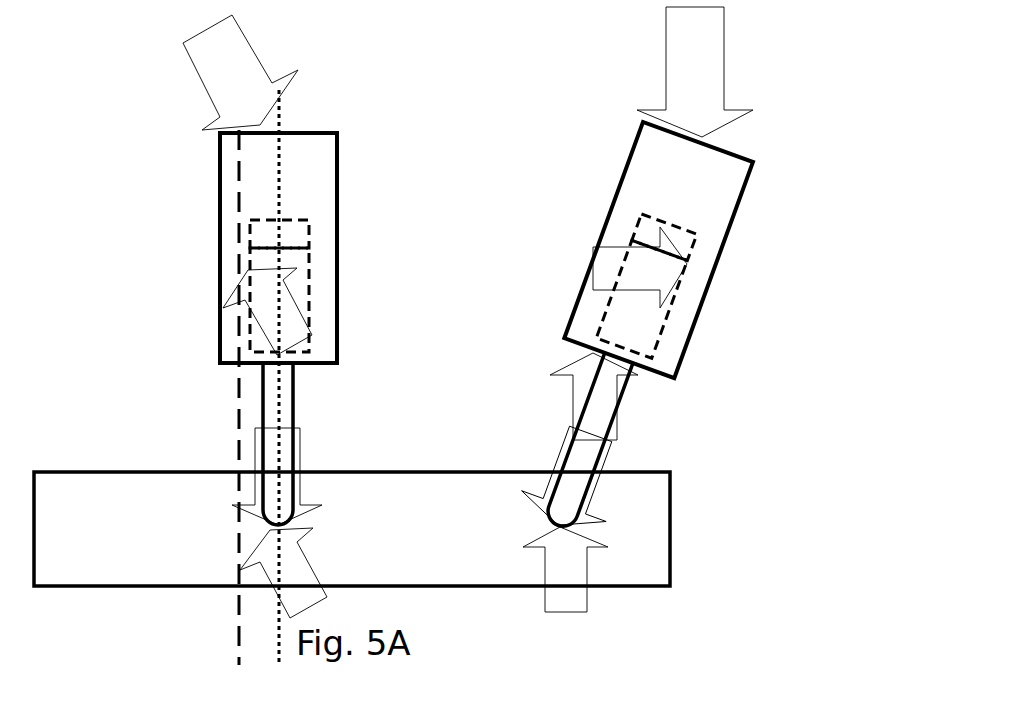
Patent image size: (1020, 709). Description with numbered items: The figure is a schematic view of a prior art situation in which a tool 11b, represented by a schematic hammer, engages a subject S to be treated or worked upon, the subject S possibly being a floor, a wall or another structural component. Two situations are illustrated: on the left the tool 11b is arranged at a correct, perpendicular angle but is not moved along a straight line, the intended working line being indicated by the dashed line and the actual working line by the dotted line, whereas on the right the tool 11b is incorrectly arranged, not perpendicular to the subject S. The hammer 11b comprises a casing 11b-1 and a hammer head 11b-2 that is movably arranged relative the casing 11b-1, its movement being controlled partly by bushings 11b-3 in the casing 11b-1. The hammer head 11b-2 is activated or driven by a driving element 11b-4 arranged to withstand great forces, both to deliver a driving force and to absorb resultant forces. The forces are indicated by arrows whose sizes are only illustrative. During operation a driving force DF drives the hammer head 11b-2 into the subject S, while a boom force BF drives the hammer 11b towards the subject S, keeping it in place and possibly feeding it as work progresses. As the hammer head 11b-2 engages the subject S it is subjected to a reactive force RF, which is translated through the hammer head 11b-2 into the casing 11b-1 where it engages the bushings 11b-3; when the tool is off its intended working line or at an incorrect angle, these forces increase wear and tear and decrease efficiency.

The subject S is at (145, 468).
The tool 11b is at (464, 302).
The casing 11b-1 is at (337, 152).
The hammer head 11b-2 is at (294, 440).
The bushings 11b-3 is at (248, 295).
The driving element 11b-4 is at (248, 238).
The boom force BF is at (468, 72).
The driving force DF is at (253, 457).
The reactive force RF is at (557, 370).